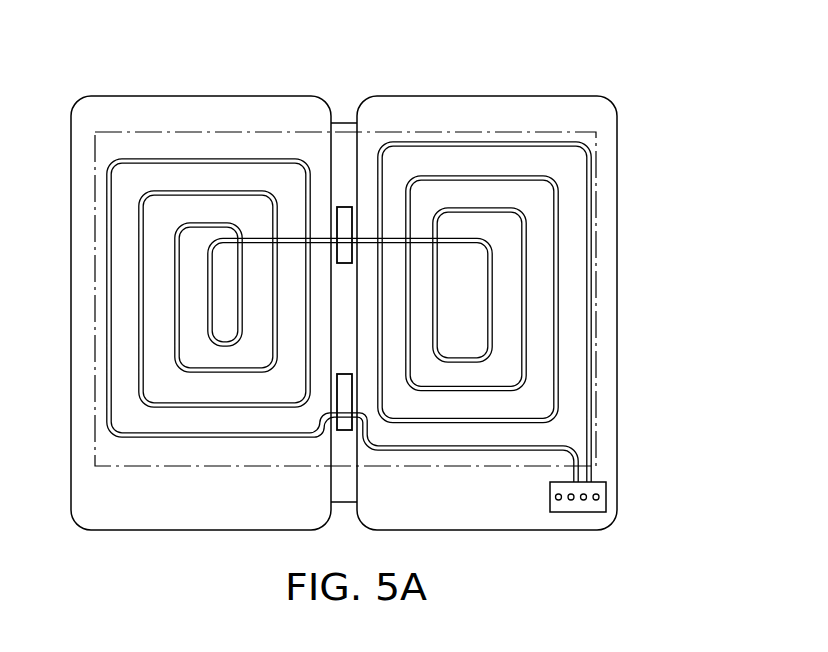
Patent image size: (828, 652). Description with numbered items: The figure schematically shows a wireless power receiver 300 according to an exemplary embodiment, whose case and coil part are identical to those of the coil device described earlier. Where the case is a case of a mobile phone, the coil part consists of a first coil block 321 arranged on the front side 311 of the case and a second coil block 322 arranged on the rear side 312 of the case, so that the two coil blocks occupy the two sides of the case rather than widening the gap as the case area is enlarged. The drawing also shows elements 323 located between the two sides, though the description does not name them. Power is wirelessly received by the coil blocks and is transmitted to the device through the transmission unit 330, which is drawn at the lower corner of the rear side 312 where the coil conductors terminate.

The wireless power receiver 300 is at (327, 20).
The front side 311 is at (261, 104).
The rear side 312 is at (479, 104).
The first coil block 321 is at (193, 160).
The second coil block 322 is at (547, 143).
The connection member 323 is at (343, 207).
The transmission unit 330 is at (606, 490).